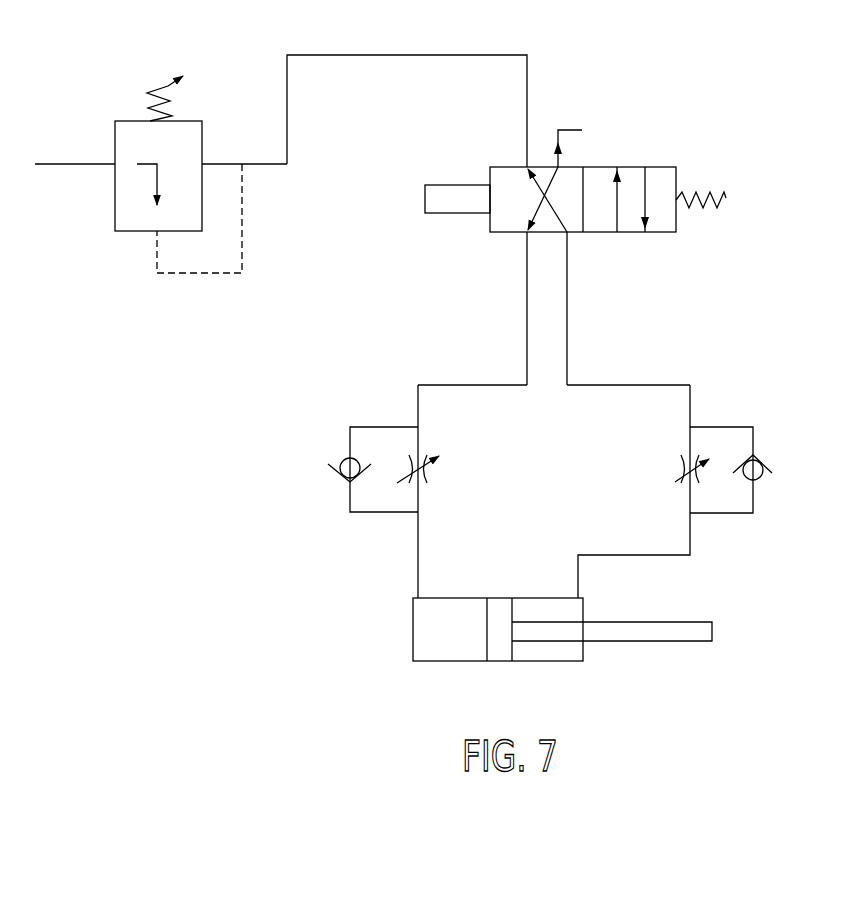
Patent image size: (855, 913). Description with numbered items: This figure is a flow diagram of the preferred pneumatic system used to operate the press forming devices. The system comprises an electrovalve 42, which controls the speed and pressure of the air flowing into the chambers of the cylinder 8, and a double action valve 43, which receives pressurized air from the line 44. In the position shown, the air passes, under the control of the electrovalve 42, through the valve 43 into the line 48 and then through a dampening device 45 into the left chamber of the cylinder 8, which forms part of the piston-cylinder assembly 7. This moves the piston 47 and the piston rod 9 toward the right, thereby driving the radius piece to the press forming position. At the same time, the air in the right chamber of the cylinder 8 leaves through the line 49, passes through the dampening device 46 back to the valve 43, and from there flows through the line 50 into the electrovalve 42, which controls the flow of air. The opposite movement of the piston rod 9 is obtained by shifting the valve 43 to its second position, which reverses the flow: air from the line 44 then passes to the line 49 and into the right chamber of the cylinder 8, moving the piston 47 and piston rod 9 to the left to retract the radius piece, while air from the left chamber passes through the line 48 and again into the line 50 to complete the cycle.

The hydraulic cylinder 7 is at (519, 657).
The pneumatic piston-cylinder assembly 8 is at (457, 661).
The piston rod 9 is at (635, 633).
The electrovalve 42 is at (183, 137).
The double action valve 43 is at (602, 165).
The line 44 is at (572, 127).
The dampening device 45 is at (385, 457).
The dampening device 46 is at (724, 452).
The piston 47 is at (500, 647).
The line 48 is at (527, 295).
The line 49 is at (567, 333).
The line 50 is at (408, 55).